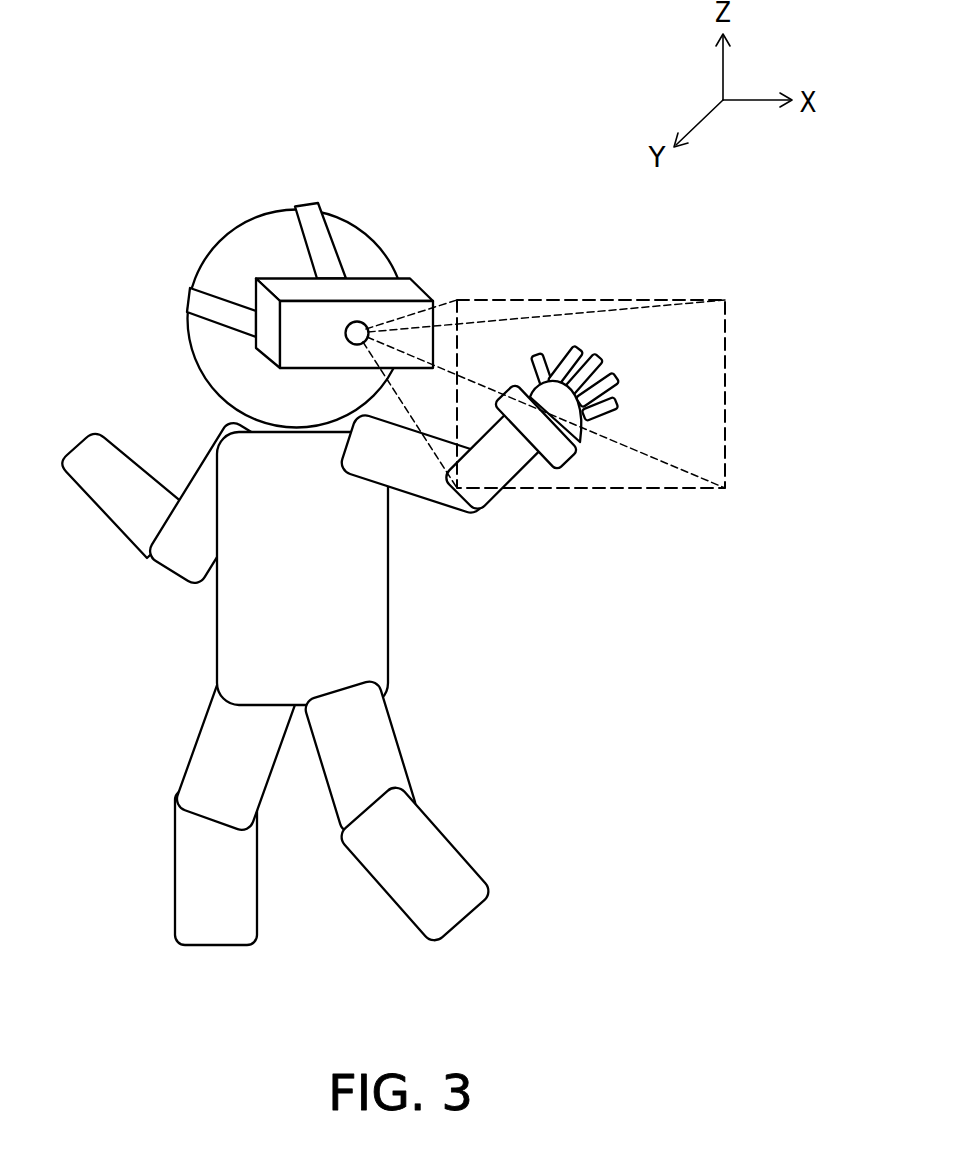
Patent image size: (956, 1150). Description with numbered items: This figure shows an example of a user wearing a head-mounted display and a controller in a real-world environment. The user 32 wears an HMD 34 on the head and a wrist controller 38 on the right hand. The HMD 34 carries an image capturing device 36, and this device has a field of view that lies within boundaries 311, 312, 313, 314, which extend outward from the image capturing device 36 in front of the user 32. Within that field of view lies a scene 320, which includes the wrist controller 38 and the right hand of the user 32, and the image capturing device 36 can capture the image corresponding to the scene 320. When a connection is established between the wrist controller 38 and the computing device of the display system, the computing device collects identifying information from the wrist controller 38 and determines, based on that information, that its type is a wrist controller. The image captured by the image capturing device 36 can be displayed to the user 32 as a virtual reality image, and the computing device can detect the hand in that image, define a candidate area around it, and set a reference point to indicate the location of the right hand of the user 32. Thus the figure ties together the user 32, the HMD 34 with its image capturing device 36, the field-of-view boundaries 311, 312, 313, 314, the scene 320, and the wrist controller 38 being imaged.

The user 32 is at (372, 246).
The HMD 34 is at (295, 292).
The image capturing device 36 is at (346, 336).
The wrist controller 38 is at (550, 448).
The boundary 311 is at (444, 300).
The boundary 312 is at (602, 312).
The boundary 313 is at (447, 460).
The boundary 314 is at (686, 473).
The scene 320 is at (637, 493).